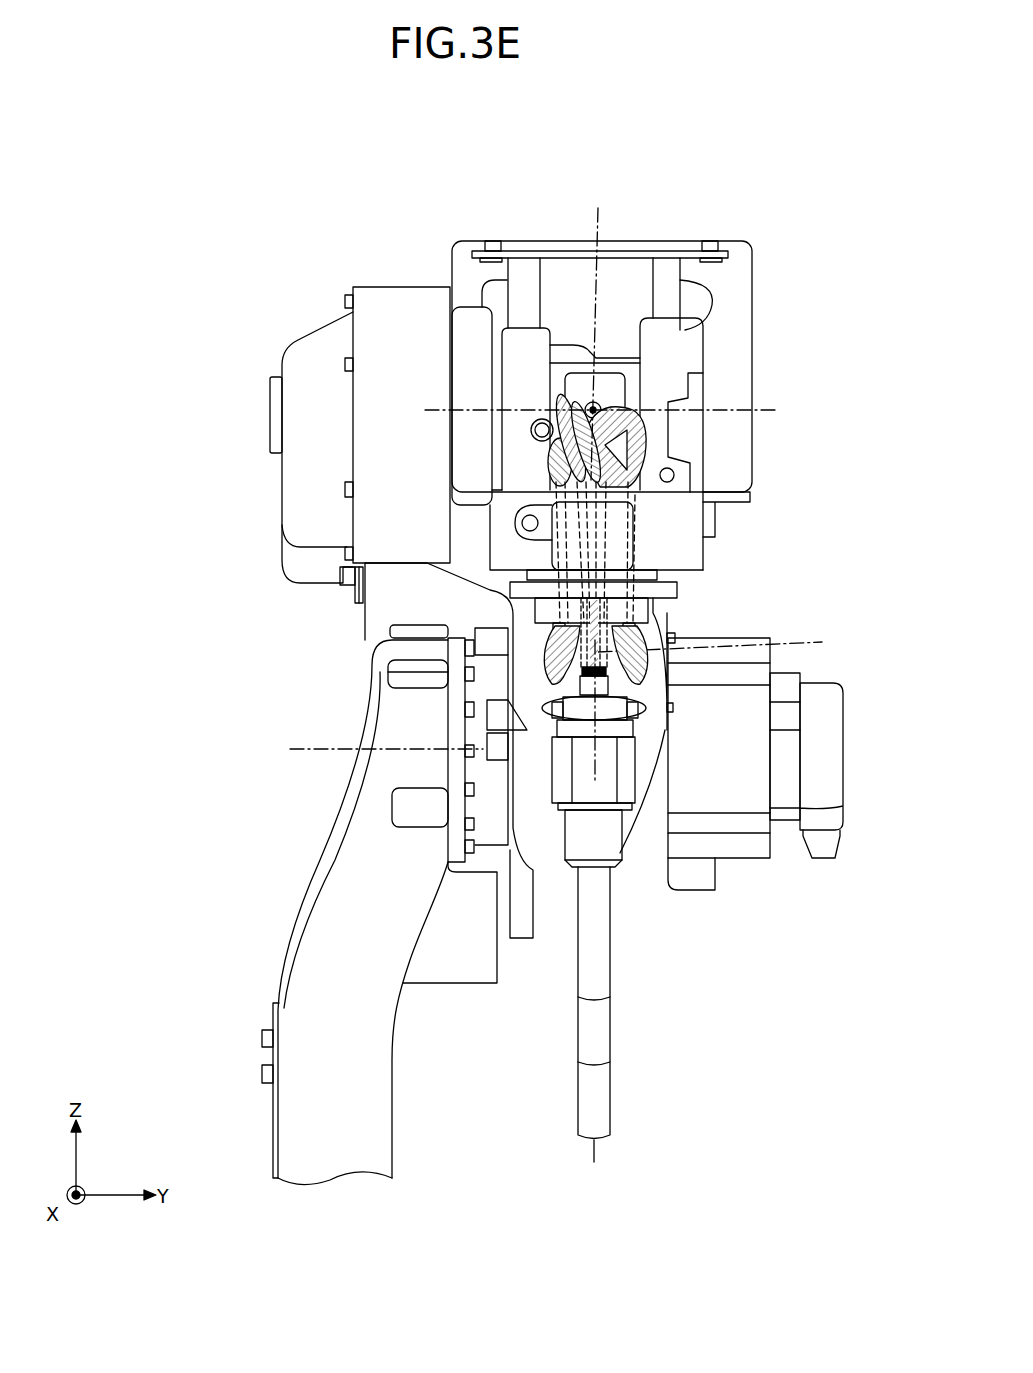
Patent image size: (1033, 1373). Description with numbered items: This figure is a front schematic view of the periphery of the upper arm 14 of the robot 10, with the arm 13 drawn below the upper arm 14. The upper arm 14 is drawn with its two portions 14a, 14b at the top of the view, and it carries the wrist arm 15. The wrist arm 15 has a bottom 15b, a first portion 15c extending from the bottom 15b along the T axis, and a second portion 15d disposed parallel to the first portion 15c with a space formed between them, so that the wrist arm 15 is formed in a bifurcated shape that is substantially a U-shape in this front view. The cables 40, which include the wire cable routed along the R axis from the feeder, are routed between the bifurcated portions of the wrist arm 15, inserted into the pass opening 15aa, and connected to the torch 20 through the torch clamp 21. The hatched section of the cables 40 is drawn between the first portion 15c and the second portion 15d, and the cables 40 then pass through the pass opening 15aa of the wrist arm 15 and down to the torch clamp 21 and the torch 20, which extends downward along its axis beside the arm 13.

The robot system 10 is at (252, 152).
The robot arm 13 is at (305, 1122).
The upper arm 14 is at (510, 152).
The first wrist element 14a is at (405, 286).
The second wrist element 14b is at (513, 243).
The wrist arm 15 is at (731, 316).
The pass opening 15aa is at (636, 588).
The bottom 15b is at (648, 470).
The first portion 15c is at (515, 357).
The second portion 15d is at (688, 350).
The torch 20 is at (600, 938).
The torch clamp 21 is at (546, 686).
The cables 40 is at (552, 456).